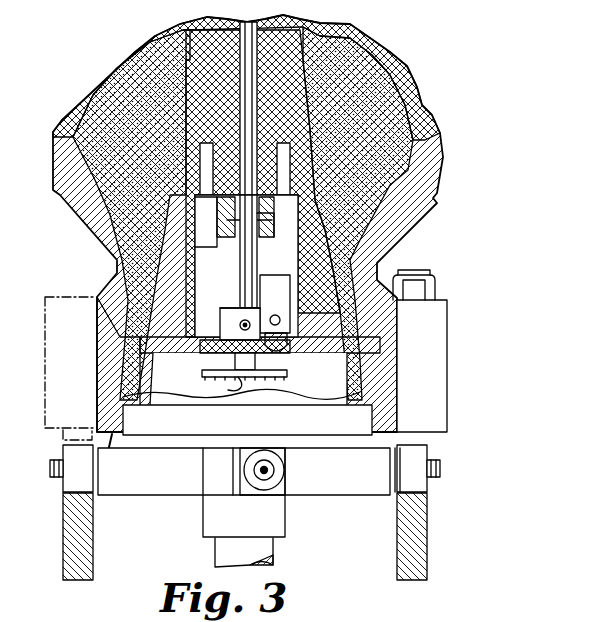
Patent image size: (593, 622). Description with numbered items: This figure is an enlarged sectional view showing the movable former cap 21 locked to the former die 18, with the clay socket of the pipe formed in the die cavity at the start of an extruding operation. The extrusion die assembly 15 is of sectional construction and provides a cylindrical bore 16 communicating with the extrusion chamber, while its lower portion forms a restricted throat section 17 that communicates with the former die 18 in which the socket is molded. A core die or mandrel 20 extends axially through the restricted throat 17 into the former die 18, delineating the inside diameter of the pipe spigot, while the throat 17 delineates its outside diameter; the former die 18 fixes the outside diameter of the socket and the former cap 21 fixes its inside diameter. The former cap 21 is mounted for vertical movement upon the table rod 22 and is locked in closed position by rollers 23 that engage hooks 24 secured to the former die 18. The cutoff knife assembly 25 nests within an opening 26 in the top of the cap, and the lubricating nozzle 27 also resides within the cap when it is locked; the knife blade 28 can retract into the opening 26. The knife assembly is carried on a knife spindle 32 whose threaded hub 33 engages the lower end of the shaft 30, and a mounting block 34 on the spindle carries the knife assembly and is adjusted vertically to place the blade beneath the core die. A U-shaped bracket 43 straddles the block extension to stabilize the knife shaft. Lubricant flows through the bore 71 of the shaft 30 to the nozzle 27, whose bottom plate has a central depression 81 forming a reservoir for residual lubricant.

The extrusion die assembly 15 is at (446, 166).
The cylindrical bore 16 is at (413, 103).
The restricted throat section 17 is at (113, 228).
The former die 18 is at (120, 371).
The core die or mandrel 20 is at (303, 26).
The movable former cap 21 is at (352, 423).
The table rod 22 is at (258, 553).
The rollers 23 is at (72, 483).
The hooks 24 is at (82, 543).
The cutoff knife assembly 25 is at (221, 308).
The opening 26 is at (335, 316).
The lubricating nozzle 27 is at (290, 376).
The knife blade 28 is at (210, 351).
The shaft 30 is at (228, 22).
The knife spindle 32 is at (219, 236).
The threaded hub 33 is at (259, 215).
The mounting block 34 is at (224, 317).
The U-shaped bracket 43 is at (283, 283).
The bore 71 is at (234, 180).
The depression 81 is at (225, 389).